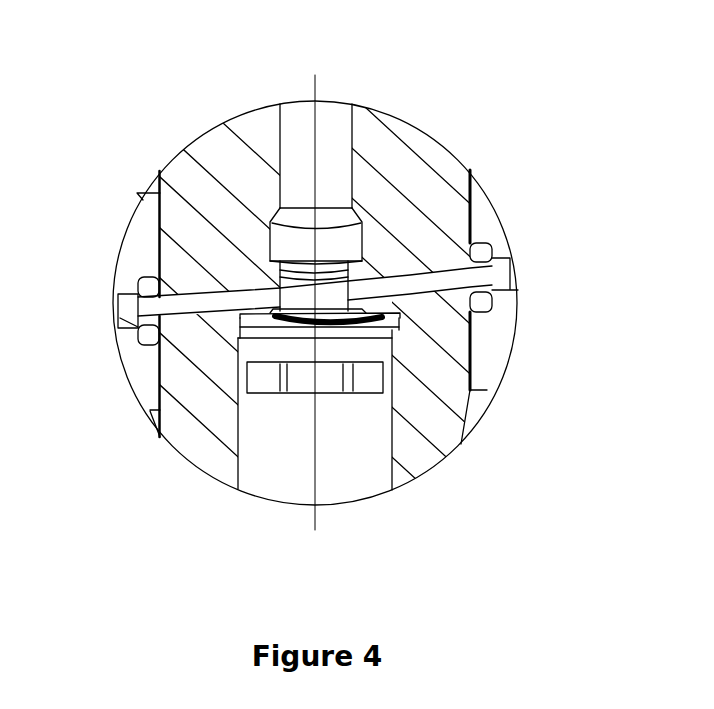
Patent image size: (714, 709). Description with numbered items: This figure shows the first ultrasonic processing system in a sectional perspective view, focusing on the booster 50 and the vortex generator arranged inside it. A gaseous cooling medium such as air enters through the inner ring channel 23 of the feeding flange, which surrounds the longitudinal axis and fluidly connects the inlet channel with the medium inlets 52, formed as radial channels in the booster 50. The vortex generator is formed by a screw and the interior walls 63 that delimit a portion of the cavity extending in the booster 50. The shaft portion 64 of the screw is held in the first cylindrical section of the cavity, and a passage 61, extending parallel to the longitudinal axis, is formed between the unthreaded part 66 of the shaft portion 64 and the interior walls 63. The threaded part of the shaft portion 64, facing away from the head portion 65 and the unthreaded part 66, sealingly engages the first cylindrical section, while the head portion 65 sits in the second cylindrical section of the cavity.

The inner ring channel 23 is at (504, 272).
The booster 50 is at (443, 425).
The medium inlets 52 is at (213, 293).
The passage 61 is at (246, 314).
The interior walls 63 is at (493, 309).
The shaft portion 64 is at (352, 280).
The head portion 65 is at (473, 330).
The unthreaded part 66 is at (248, 291).